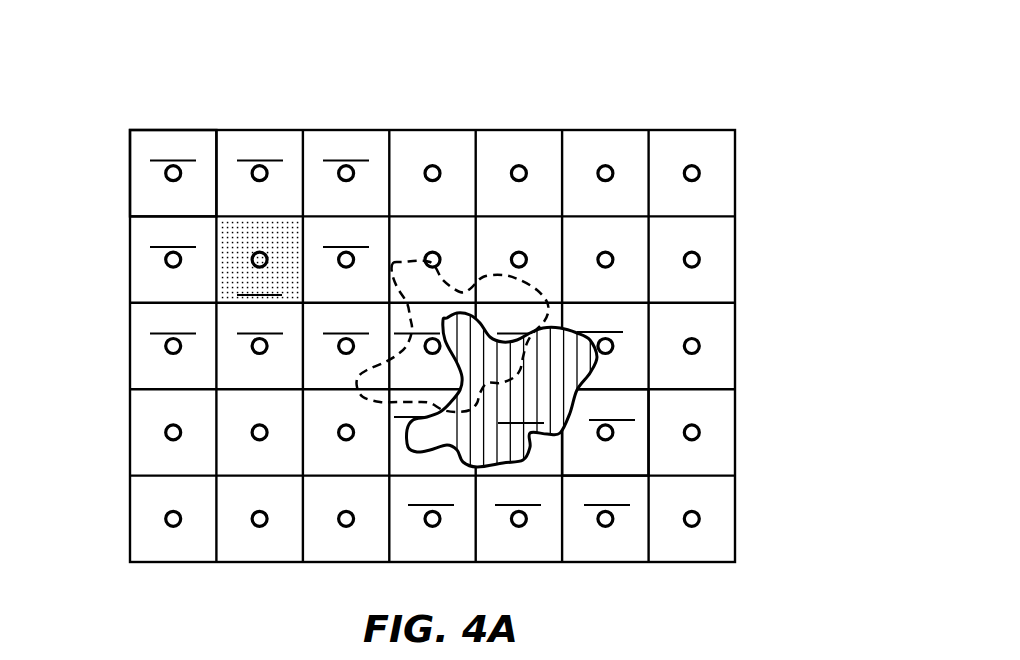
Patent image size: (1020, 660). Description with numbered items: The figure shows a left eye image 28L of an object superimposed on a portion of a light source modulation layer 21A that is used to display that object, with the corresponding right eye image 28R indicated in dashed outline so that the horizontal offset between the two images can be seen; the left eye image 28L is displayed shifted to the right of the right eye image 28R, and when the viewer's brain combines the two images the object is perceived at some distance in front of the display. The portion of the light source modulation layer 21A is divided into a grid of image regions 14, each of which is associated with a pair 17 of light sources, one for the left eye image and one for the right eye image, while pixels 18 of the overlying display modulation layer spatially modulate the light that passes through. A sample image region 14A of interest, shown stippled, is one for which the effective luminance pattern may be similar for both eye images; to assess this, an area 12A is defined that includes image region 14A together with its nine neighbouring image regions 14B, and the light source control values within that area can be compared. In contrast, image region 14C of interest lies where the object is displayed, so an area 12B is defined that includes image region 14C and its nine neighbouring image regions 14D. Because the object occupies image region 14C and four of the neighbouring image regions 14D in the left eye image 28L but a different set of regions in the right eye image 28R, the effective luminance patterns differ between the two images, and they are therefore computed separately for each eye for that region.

The area 12A is at (160, 198).
The area 12B is at (620, 456).
The image region 14 is at (237, 255).
The image region of interest 14A is at (259, 259).
The neighbouring image regions 14B is at (259, 235).
The image region of interest 14C is at (521, 412).
The neighbouring image regions 14D is at (515, 406).
The pair of light sources 17 is at (256, 253).
The pixels 18 is at (264, 243).
The light source modulation layer 21A is at (607, 128).
The right eye image 28R is at (497, 292).
The left eye image 28L is at (563, 347).